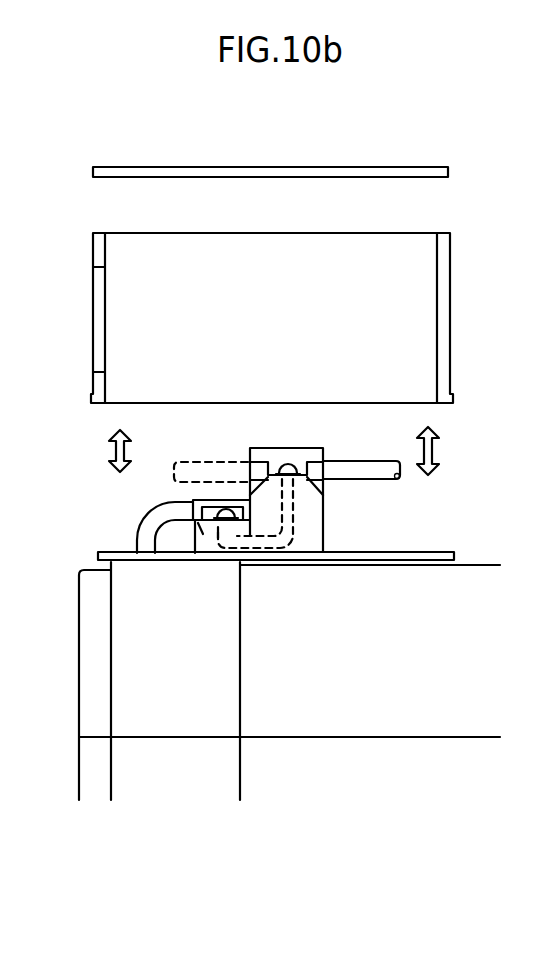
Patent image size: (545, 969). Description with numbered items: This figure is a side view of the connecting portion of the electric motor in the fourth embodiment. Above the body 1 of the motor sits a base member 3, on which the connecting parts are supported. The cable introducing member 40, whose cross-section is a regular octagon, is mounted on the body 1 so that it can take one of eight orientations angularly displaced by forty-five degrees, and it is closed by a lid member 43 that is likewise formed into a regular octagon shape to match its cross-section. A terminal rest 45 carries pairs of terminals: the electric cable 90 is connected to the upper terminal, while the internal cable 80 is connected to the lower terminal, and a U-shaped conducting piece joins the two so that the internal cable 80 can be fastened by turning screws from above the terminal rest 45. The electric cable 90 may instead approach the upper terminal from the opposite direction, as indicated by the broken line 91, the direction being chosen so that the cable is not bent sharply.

The body 1 is at (125, 655).
The base member 3 is at (422, 551).
The cable introducing member 40 is at (93, 320).
The lid member 43 is at (117, 166).
The terminal rest 45 is at (313, 522).
The internal cable 80 is at (148, 522).
The electric cable 90 is at (372, 461).
The broken line 91 is at (212, 459).